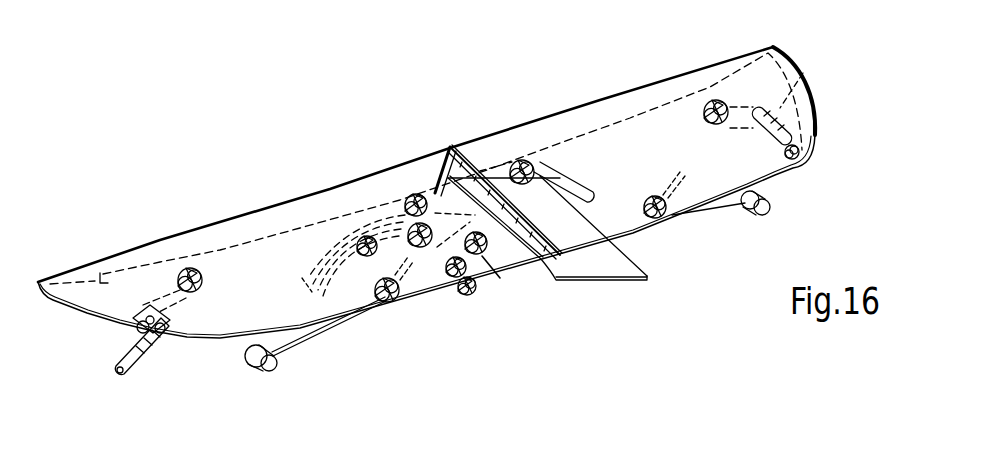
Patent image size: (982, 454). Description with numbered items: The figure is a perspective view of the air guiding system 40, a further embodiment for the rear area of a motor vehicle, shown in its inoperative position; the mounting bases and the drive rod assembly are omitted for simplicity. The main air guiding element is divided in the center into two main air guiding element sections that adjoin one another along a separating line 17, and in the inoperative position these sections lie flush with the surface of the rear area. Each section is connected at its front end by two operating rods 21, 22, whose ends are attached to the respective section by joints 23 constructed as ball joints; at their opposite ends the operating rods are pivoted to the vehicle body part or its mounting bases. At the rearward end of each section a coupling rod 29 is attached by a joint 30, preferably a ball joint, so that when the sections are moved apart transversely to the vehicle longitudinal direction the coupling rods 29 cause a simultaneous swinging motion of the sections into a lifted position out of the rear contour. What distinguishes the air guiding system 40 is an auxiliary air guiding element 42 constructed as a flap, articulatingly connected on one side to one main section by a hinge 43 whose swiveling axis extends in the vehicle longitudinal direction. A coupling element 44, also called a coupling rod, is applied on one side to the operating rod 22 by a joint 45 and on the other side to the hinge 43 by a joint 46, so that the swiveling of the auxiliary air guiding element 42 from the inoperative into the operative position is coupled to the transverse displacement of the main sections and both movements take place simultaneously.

The air guiding system 40 is at (296, 112).
The separating line 17 is at (448, 142).
The operating rod 21 is at (134, 364).
The operating rod 22 is at (326, 256).
The joint 23 is at (184, 256).
The coupling rod 29 is at (300, 360).
The joint 30 is at (397, 307).
The auxiliary air guiding element 42 is at (605, 263).
The hinge 43 is at (476, 292).
The coupling element 44 is at (436, 252).
The joint 45 is at (378, 218).
The joint 46 is at (500, 278).